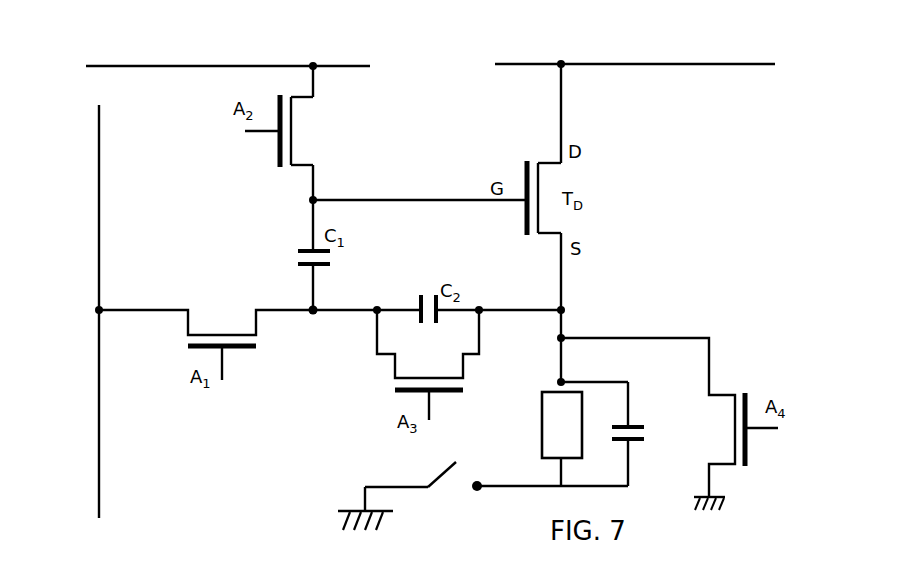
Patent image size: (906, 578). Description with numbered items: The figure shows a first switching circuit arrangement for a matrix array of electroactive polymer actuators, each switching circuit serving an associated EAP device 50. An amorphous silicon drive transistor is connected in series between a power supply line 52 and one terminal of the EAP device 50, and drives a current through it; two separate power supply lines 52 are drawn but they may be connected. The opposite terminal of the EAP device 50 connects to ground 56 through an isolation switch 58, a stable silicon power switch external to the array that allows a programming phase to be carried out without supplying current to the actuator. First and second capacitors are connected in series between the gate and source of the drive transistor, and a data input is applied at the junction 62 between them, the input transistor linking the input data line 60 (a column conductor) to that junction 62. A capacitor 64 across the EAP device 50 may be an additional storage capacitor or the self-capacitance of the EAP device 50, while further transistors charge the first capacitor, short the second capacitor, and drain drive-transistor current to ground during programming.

The power supply line 52 is at (165, 66).
The input data line 60 is at (99, 232).
The junction 62 is at (316, 326).
The EAP device 50 is at (540, 435).
The capacitor 64 is at (634, 422).
The ground 56 is at (350, 510).
The isolation switch 58 is at (440, 476).